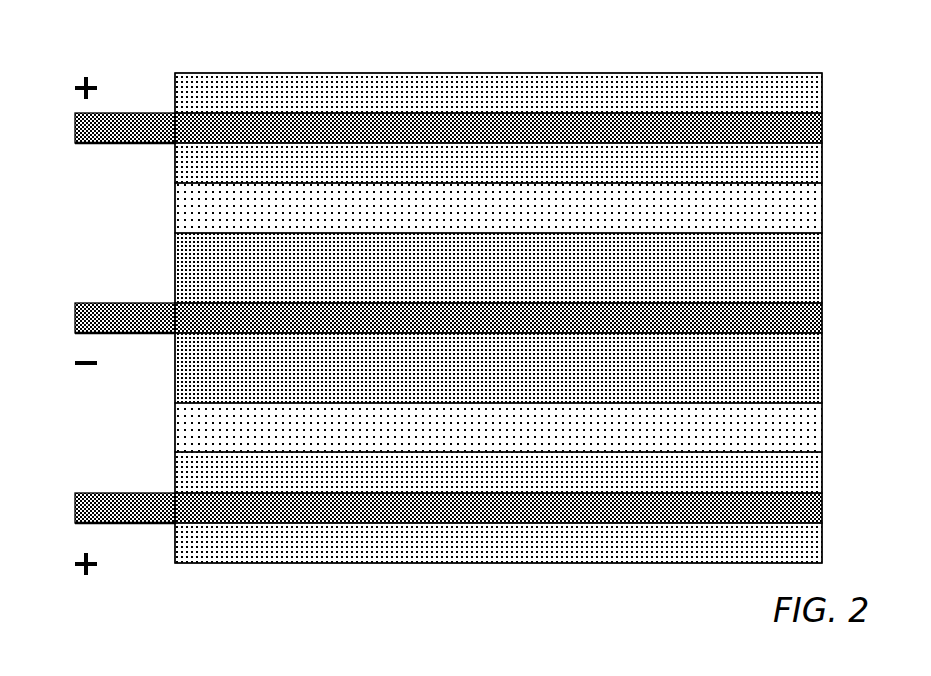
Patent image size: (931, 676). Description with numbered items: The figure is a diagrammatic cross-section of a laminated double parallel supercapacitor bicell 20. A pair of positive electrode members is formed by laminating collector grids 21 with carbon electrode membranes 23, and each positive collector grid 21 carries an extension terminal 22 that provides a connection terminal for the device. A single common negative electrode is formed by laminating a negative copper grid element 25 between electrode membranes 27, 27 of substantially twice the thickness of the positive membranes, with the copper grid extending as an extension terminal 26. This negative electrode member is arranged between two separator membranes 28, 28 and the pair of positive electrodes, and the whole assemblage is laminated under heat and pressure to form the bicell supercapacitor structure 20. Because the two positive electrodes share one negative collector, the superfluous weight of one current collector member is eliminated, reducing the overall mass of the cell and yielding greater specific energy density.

The supercapacitor bicell 20 is at (330, 589).
The collector grids 21 is at (820, 135).
The extension terminal 22 is at (76, 132).
The carbon electrode membranes 23 is at (814, 98).
The negative copper grid element 25 is at (820, 320).
The extension terminal 26 is at (76, 318).
The electrode membranes 27 is at (814, 275).
The separator membranes 28 is at (814, 208).